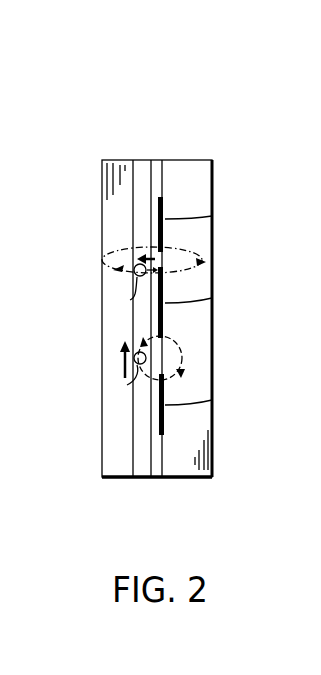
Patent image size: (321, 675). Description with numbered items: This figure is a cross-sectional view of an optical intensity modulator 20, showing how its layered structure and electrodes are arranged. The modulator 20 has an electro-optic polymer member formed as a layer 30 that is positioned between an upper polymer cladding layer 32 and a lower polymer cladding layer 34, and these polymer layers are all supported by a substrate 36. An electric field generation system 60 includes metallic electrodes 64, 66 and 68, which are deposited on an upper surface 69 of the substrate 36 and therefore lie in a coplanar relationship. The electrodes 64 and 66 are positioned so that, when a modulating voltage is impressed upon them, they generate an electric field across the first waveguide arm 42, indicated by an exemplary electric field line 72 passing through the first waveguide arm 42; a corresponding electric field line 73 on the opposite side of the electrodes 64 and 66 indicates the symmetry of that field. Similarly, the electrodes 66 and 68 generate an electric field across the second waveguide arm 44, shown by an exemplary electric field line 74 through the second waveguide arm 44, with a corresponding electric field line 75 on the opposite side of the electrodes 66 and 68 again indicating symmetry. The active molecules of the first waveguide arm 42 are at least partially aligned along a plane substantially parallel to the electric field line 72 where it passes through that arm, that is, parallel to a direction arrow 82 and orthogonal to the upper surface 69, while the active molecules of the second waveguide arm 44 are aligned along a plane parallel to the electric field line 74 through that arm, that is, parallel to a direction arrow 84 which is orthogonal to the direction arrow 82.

The optical intensity modulator 20 is at (188, 150).
The electro-optic polymer layer 30 is at (130, 418).
The upper polymer cladding layer 32 is at (101, 170).
The lower polymer cladding layer 34 is at (150, 450).
The substrate 36 is at (214, 450).
The first waveguide arm 42 is at (130, 300).
The second waveguide arm 44 is at (127, 385).
The electric field generation system 60 is at (170, 196).
The electrode 64 is at (212, 216).
The electrode 66 is at (212, 298).
The electrode 68 is at (212, 400).
The upper surface 69 is at (162, 176).
The electric field line 72 is at (133, 270).
The electric field line 73 is at (214, 260).
The electric field line 74 is at (141, 352).
The electric field line 75 is at (183, 350).
The direction arrow 82 is at (150, 254).
The direction arrow 84 is at (121, 362).